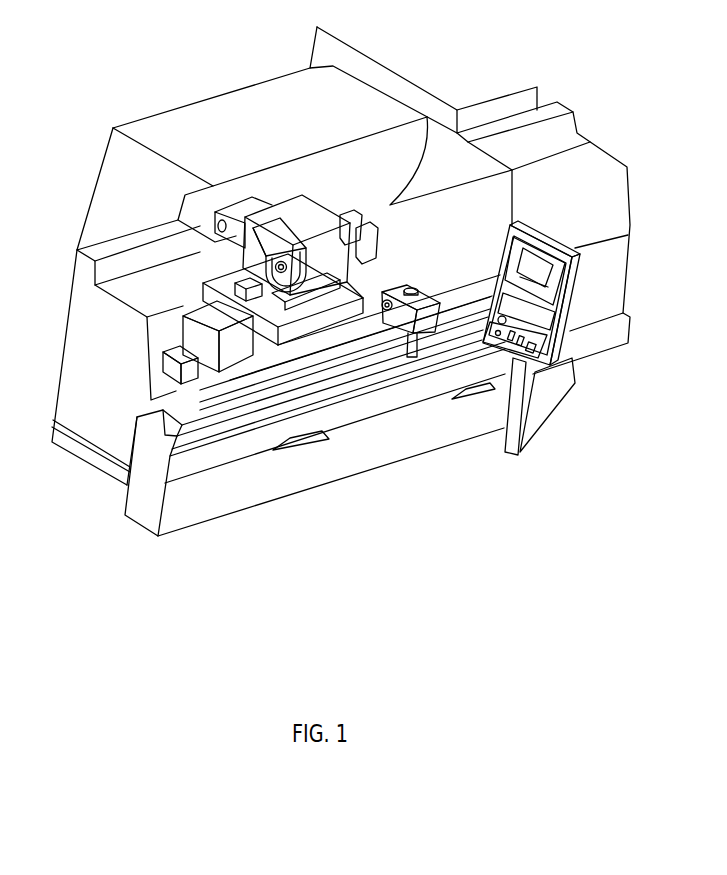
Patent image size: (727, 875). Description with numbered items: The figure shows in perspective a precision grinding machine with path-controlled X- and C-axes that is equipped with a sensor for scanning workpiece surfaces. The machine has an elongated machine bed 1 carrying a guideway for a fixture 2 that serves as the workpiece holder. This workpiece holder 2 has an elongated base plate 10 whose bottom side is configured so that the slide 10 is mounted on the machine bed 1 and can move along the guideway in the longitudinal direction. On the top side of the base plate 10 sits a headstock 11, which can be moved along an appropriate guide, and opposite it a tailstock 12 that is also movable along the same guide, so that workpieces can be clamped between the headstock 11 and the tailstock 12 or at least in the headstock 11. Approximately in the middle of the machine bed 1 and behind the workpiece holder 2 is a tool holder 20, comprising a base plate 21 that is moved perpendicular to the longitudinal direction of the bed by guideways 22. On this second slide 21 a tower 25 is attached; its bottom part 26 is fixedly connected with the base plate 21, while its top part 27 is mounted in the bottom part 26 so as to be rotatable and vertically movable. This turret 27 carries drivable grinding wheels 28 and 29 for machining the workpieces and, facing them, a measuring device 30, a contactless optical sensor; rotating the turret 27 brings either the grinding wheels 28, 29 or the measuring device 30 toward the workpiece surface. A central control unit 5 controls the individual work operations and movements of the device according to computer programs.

The machine bed 1 is at (84, 486).
The fixture 2 is at (422, 371).
The central control unit 5 is at (100, 162).
The base plate 10 is at (216, 430).
The headstock 11 is at (160, 368).
The tailstock 12 is at (418, 284).
The tool holder 20 is at (272, 188).
The base plate 21 is at (206, 297).
The guideways 22 is at (283, 343).
The tower 25 is at (322, 200).
The bottom part 26 is at (348, 285).
The top part 27 is at (266, 193).
The grinding wheel 28 is at (210, 243).
The grinding wheel 29 is at (395, 284).
The measuring device 30 is at (245, 285).